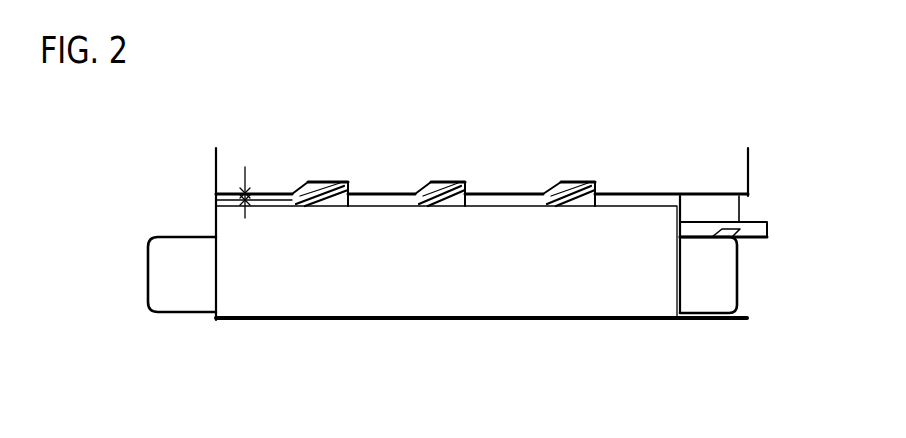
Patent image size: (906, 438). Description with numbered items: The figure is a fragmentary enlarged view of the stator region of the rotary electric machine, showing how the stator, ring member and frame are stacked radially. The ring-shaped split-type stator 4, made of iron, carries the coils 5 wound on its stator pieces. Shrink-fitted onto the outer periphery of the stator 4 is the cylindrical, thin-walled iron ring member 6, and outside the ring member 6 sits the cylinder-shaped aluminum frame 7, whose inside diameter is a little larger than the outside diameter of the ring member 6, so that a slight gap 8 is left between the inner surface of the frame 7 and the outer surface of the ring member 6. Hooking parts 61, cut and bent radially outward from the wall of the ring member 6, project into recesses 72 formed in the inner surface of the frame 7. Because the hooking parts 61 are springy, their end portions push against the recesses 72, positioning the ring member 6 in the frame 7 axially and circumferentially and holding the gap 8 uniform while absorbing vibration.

The stator 4 is at (485, 237).
The coils 5 is at (183, 292).
The ring member 6 is at (282, 202).
The hooking parts 61 is at (322, 190).
The frame 7 is at (650, 167).
The recesses 72 is at (557, 189).
The gap 8 is at (245, 173).